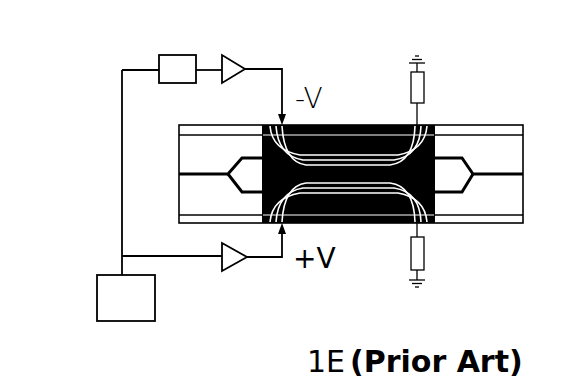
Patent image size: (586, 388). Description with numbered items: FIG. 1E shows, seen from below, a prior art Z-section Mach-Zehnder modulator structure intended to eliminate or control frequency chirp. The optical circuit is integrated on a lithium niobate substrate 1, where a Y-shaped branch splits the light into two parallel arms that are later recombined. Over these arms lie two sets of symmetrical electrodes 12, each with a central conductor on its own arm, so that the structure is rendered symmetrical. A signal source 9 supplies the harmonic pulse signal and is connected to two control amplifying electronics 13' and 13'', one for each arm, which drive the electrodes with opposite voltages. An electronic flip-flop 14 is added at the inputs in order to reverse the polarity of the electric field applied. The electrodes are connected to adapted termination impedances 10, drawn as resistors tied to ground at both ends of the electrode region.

The lithium niobate substrate 1 is at (510, 222).
The symmetrical electrodes 12 is at (440, 222).
The termination impedance 10 is at (424, 97).
The electronic flip-flop 14 is at (177, 62).
The control amplifying electronics 13' is at (254, 70).
The control amplifying electronics 13'' is at (256, 271).
The signal source 9 is at (143, 305).